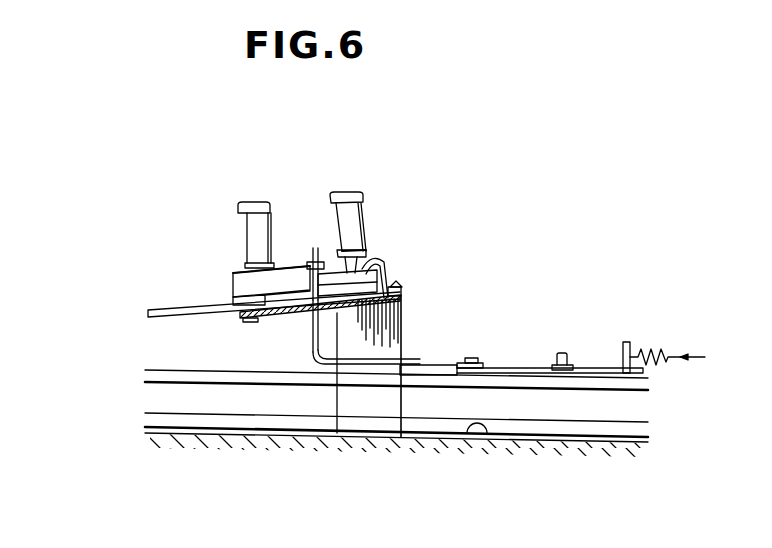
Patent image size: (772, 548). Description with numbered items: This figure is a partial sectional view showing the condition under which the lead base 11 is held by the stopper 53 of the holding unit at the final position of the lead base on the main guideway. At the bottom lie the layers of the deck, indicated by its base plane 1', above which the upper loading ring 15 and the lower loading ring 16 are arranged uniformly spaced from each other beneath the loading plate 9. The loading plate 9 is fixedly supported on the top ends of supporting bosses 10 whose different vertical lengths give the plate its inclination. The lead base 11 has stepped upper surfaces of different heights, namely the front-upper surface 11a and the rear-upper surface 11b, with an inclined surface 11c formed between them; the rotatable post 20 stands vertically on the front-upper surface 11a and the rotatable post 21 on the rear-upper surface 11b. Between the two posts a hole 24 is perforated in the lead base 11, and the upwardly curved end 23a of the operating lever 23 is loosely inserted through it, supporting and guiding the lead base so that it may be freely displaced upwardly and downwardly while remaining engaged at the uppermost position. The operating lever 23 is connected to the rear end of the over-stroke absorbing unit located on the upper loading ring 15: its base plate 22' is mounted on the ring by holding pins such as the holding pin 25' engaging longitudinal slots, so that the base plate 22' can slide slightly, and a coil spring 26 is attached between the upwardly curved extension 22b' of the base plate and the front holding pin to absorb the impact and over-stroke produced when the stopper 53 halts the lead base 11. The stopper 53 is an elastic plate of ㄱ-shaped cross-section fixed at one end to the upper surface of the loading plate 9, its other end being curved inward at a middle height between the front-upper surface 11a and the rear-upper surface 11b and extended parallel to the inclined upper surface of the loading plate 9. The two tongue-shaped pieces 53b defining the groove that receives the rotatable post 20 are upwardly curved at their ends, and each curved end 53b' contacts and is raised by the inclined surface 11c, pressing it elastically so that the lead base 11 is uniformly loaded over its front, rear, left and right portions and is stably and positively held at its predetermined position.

The loading plate 9 is at (173, 309).
The lead base 11 is at (228, 279).
The front-upper surface 11a is at (366, 253).
The rear-upper surface 11b is at (245, 265).
The inclined surface 11c is at (288, 271).
The rotatable post 21 is at (252, 203).
The rotatable post 20 is at (338, 230).
The tongue-shaped piece 53b is at (401, 186).
The curved end of tongue-shaped piece 53b' is at (312, 194).
The upwardly curved end of operating lever 23a is at (316, 248).
The hole 24 is at (312, 287).
The operating lever 23 is at (420, 362).
The stopper 53 is at (393, 266).
The supporting boss 10 is at (403, 345).
The base plate 22' is at (521, 325).
The holding pin 25' is at (603, 322).
The upwardly curved extension 22b' is at (670, 325).
The coil spring 26 is at (670, 352).
The upper loading ring 15 is at (193, 383).
The lower loading ring 16 is at (300, 433).
The base plane 1' is at (476, 463).